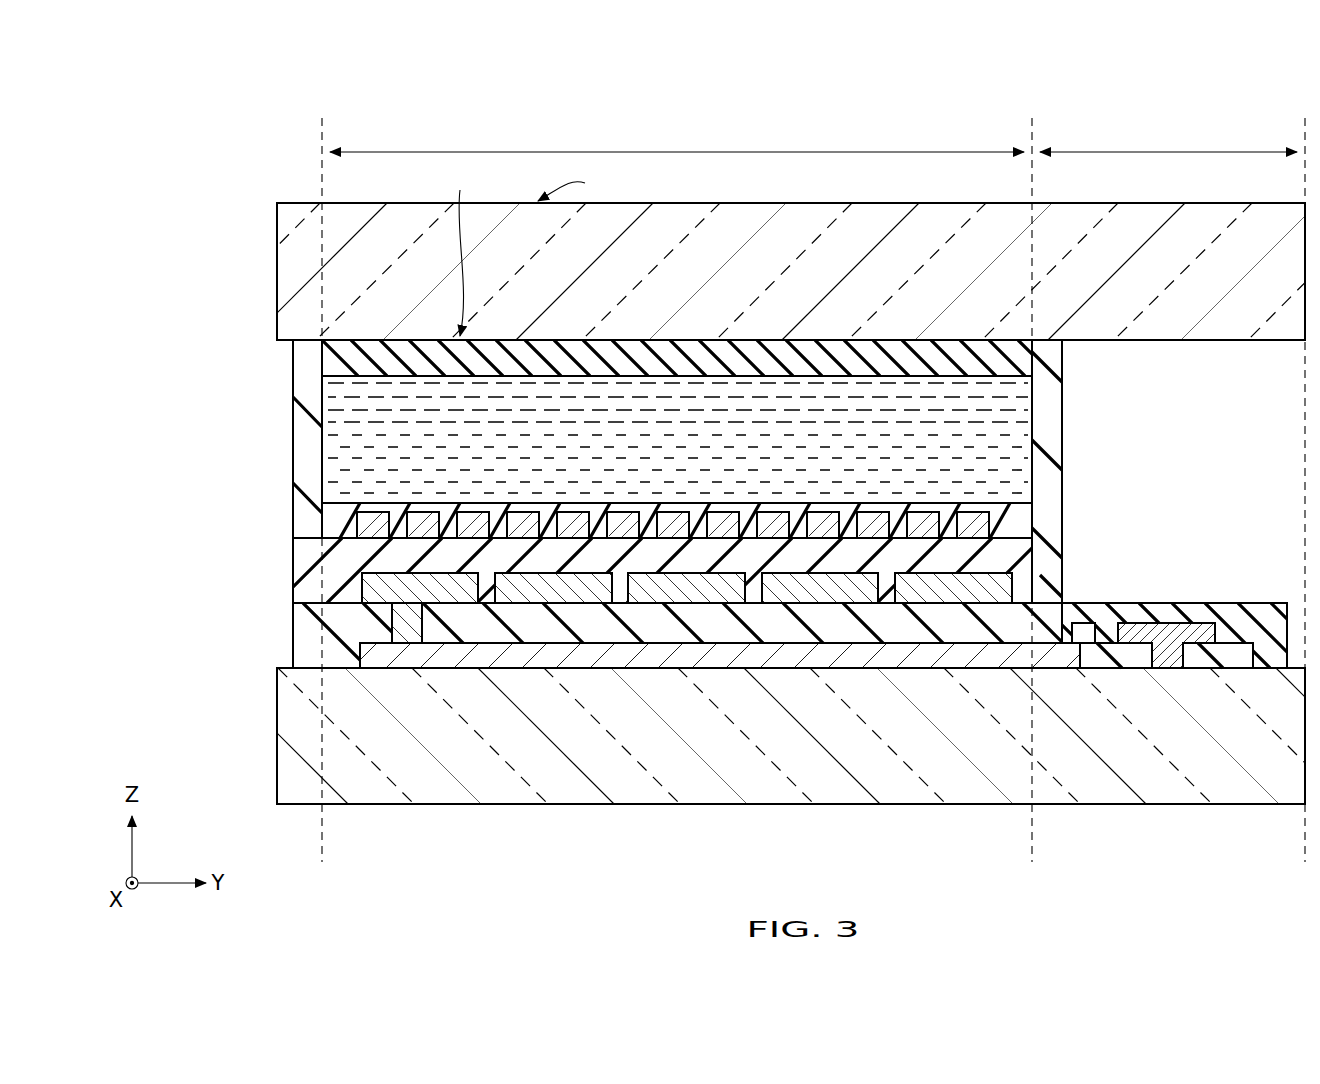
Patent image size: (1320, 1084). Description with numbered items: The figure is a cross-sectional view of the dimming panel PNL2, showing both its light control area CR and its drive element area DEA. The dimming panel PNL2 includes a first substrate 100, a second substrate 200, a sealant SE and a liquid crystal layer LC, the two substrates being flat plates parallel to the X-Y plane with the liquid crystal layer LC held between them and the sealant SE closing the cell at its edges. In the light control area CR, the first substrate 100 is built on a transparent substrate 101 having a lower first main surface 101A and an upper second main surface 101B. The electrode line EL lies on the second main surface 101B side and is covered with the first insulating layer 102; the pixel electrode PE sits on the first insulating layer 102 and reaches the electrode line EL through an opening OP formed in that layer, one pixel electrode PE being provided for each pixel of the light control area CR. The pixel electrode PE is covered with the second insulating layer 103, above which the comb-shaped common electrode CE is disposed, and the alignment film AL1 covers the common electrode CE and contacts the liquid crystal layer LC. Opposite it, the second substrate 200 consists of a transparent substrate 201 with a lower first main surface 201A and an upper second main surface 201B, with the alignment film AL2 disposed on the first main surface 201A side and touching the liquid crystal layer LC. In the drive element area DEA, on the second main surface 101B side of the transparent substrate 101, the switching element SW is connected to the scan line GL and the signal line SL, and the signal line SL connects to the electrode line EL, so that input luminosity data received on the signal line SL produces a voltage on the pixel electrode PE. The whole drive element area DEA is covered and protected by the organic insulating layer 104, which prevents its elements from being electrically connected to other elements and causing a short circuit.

The dimming panel PNL2 is at (944, 131).
The light control area CR is at (677, 489).
The drive element area DEA is at (1172, 489).
The second substrate 200 is at (183, 313).
The transparent substrate 201 is at (295, 290).
The first main surface 201A is at (675, 253).
The second main surface 201B is at (795, 184).
The alignment film AL2 is at (347, 350).
The liquid crystal layer LC is at (330, 412).
The sealant SE is at (308, 470).
The alignment film AL1 is at (350, 520).
The common electrode CE is at (472, 518).
The second insulating layer 103 is at (305, 585).
The pixel electrode PE is at (458, 592).
The first insulating layer 102 is at (305, 625).
The opening OP is at (386, 633).
The first substrate 100 is at (182, 673).
The transparent substrate 101 is at (295, 745).
The first main surface 101A is at (545, 808).
The second main surface 101B is at (620, 673).
The electrode line EL is at (705, 656).
The signal line SL is at (1125, 656).
The scan line GL is at (1220, 656).
The switching element SW is at (1170, 635).
The organic insulating layer 104 is at (1258, 630).